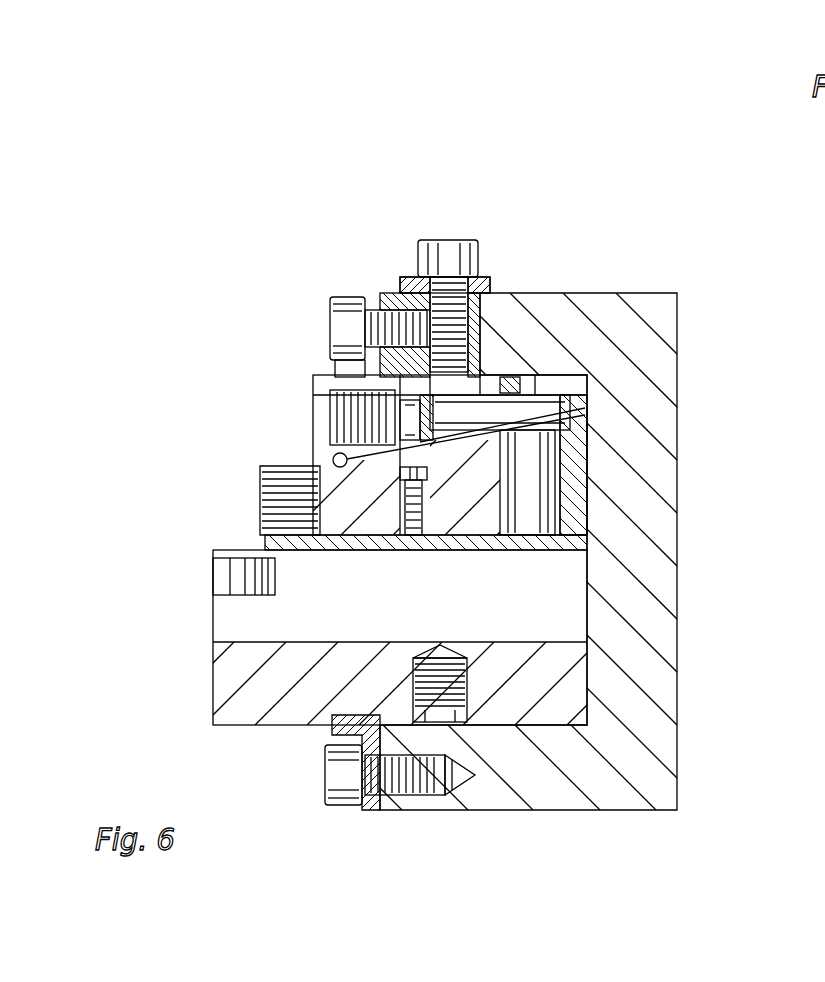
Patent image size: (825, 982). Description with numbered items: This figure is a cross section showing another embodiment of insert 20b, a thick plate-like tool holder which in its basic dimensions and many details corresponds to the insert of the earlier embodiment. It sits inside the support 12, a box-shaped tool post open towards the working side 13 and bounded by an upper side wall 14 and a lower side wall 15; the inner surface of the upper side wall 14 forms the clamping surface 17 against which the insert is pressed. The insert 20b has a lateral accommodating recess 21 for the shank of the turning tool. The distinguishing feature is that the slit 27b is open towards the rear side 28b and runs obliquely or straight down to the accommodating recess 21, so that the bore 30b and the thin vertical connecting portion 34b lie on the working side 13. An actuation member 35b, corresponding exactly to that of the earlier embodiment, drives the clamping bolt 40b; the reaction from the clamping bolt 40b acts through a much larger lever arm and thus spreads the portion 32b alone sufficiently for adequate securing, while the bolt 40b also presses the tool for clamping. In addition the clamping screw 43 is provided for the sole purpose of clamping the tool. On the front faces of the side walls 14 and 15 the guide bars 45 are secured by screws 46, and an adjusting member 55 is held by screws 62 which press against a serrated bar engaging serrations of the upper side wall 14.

The support 12 is at (662, 427).
The working side 13 is at (178, 352).
The upper side wall 14 is at (573, 320).
The lower side wall 15 is at (537, 767).
The clamping surface 17 is at (583, 373).
The insert 20b is at (232, 735).
The accommodating recess 21 is at (325, 641).
The slit 27b is at (545, 480).
The rear side 28b is at (580, 570).
The bore 30b is at (330, 452).
The portion 32b is at (560, 398).
The thin vertical connecting portion 34b is at (322, 460).
The actuation member 35b is at (527, 390).
The clamping bolt 40b is at (545, 508).
The clamping screw 43 is at (270, 508).
The guide bar 45 is at (370, 295).
The screw 46 is at (330, 778).
The adjusting member 55 is at (473, 323).
The screw 62 is at (445, 258).